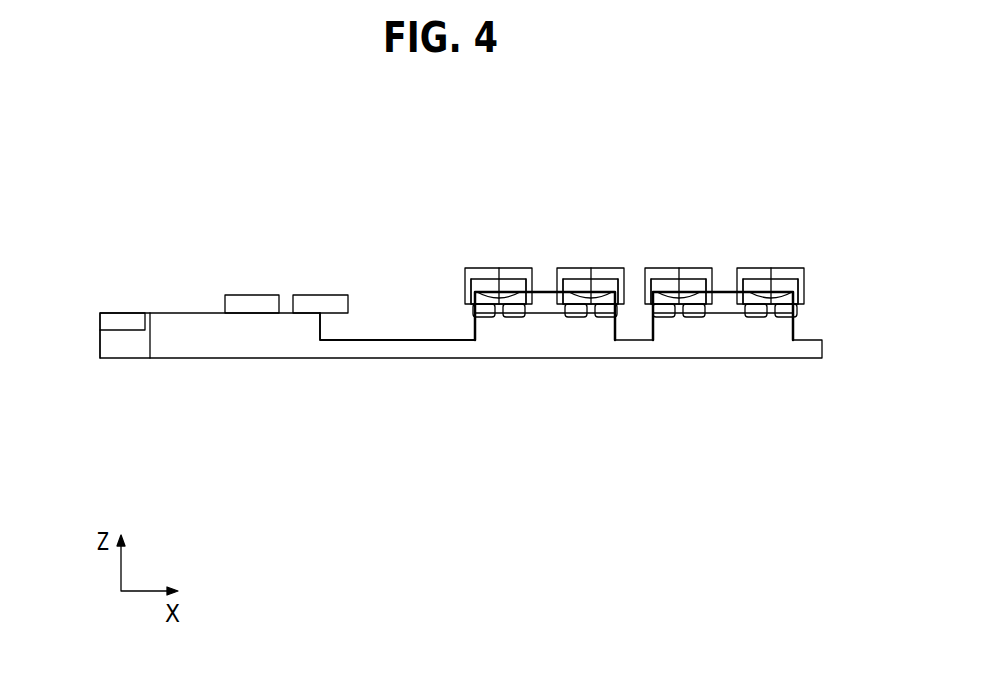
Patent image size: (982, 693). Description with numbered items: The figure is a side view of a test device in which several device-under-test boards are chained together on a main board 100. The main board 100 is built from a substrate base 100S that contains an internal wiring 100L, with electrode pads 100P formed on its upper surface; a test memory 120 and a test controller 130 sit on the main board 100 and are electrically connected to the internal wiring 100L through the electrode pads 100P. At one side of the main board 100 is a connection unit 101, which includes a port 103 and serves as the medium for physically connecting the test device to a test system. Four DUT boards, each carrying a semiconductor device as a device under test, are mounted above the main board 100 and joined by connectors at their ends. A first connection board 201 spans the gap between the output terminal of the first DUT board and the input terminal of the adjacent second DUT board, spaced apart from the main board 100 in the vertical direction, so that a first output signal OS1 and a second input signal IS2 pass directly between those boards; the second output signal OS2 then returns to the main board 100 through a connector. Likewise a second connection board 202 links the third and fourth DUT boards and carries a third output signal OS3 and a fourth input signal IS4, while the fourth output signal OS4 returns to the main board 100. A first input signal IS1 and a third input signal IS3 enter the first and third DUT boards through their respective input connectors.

The main board 100 is at (153, 440).
The substrate base 100S is at (155, 345).
The internal wiring 100L is at (320, 325).
The electrode pads 100P is at (462, 323).
The connection unit 101 is at (100, 348).
The port 103 is at (102, 321).
The test memory 120 is at (252, 295).
The test controller 130 is at (318, 295).
The first connection board 201 is at (545, 292).
The second connection board 202 is at (730, 292).
The first input signal IS1 is at (471, 298).
The second input signal IS2 is at (563, 298).
The third input signal IS3 is at (651, 298).
The fourth input signal IS4 is at (745, 298).
The first output signal OS1 is at (520, 290).
The second output signal OS2 is at (612, 290).
The third output signal OS3 is at (700, 290).
The fourth output signal OS4 is at (795, 290).